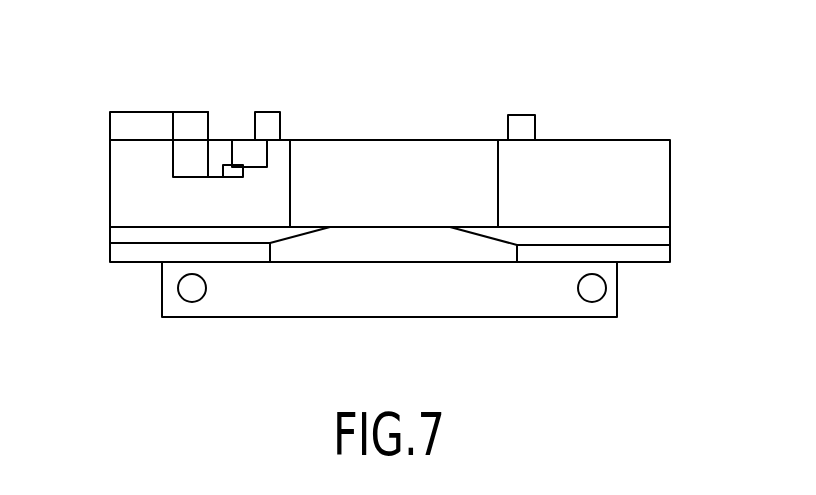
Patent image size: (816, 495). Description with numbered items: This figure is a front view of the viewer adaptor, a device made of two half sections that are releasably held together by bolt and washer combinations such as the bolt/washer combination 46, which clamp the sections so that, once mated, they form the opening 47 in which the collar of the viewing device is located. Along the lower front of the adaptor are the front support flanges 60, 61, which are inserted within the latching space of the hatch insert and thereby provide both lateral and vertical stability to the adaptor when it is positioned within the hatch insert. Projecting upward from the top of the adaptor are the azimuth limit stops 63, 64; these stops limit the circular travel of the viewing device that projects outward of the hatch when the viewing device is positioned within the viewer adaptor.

The front support flange 60 is at (123, 255).
The front support flange 61 is at (662, 253).
The azimuth limit stop 63 is at (270, 125).
The azimuth limit stop 64 is at (522, 125).
The bolt/washer combination 46 is at (192, 292).
The opening 47 is at (592, 292).